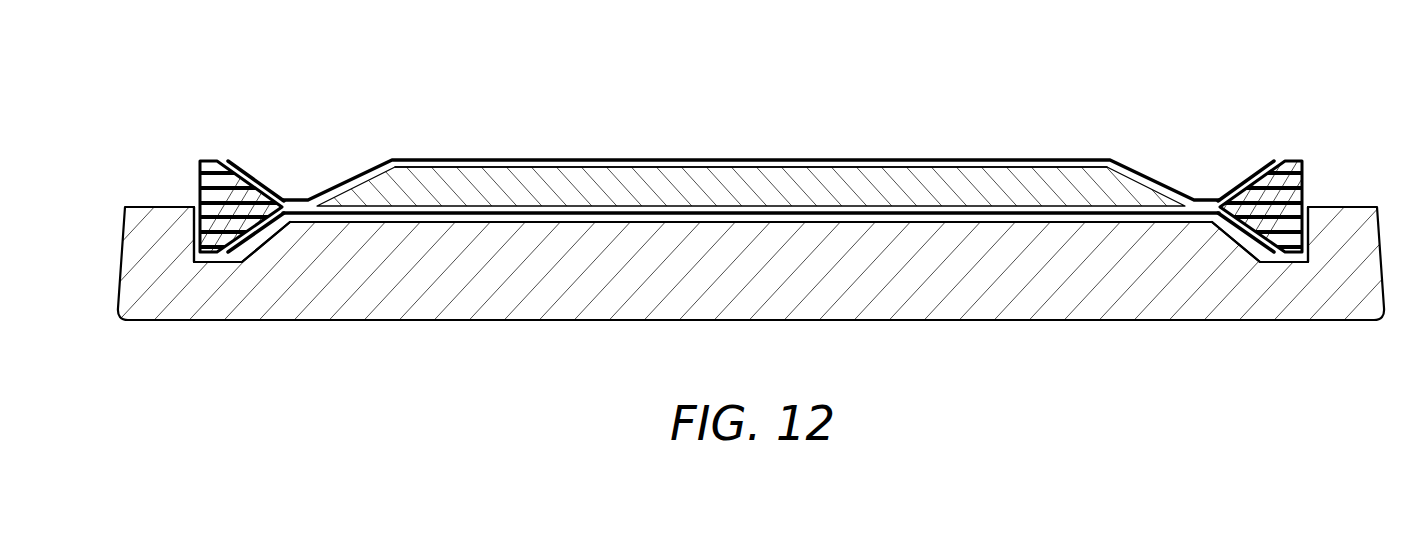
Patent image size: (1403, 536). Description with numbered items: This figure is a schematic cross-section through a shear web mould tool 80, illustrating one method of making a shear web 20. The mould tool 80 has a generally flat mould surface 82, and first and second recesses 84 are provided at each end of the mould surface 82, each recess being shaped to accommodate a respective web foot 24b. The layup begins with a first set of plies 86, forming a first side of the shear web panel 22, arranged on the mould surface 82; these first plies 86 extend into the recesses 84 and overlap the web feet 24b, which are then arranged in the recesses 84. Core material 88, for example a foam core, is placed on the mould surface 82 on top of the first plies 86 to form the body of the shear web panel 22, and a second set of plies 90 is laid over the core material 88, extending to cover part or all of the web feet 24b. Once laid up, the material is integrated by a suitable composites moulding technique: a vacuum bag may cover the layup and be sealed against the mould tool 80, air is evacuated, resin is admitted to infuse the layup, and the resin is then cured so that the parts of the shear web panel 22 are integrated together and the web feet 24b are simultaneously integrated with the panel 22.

The shear web 20 is at (877, 104).
The shear web panel 22 is at (1003, 165).
The web feet 24b is at (182, 163).
The shear web mould tool 80 is at (752, 310).
The mould surface 82 is at (533, 222).
The recesses 84 is at (223, 257).
The first set of plies 86 is at (628, 211).
The core material 88 is at (722, 180).
The second set of plies 90 is at (440, 157).